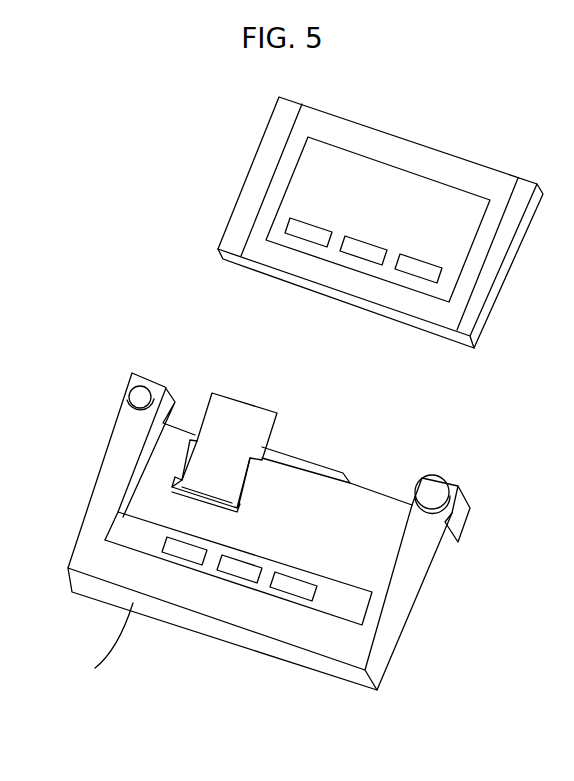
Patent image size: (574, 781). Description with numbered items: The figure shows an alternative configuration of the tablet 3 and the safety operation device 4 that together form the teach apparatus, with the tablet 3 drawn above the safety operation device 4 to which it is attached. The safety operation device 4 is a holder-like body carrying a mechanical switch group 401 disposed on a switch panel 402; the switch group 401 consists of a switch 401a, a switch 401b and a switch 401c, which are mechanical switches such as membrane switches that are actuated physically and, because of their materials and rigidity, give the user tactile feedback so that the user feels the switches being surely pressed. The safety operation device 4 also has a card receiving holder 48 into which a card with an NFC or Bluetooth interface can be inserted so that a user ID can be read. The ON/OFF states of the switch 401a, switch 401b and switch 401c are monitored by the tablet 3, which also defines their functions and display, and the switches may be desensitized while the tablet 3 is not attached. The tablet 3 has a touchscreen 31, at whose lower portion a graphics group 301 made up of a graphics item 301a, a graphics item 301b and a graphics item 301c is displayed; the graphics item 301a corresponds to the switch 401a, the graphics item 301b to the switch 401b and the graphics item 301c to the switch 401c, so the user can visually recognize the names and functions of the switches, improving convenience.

The tablet 3 is at (434, 150).
The touchscreen 31 is at (468, 188).
The graphics group 301 is at (350, 317).
The graphics item 301a is at (305, 238).
The graphics item 301b is at (362, 256).
The graphics item 301c is at (412, 321).
The safety operation device 4 is at (418, 592).
The mechanical switch group 401 is at (224, 643).
The switch 401a is at (185, 553).
The switch 401b is at (240, 571).
The switch 401c is at (286, 644).
The switch panel 402 is at (122, 528).
The card receiving holder 48 is at (212, 392).